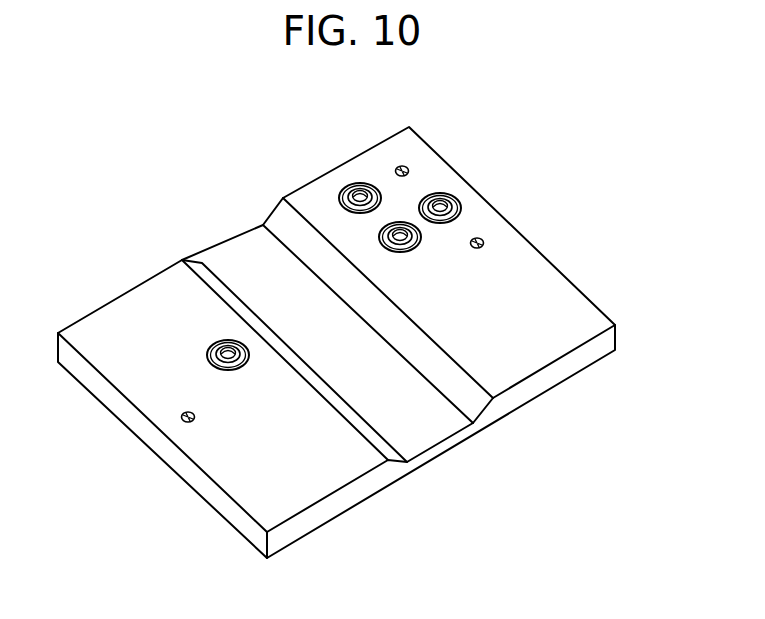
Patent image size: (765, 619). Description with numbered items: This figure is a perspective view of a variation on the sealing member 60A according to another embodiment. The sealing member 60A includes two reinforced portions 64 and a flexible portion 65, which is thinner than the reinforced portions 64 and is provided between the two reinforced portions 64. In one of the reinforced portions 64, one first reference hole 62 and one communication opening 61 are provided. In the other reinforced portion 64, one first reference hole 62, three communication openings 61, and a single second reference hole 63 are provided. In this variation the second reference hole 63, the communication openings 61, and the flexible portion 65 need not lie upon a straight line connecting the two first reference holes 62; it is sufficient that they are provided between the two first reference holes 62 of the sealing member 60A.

The sealing member 60A is at (505, 157).
The communication opening 61 is at (351, 192).
The first reference hole 62 is at (399, 167).
The second reference hole 63 is at (482, 240).
The reinforced portion 64 is at (335, 508).
The flexible portion 65 is at (445, 448).